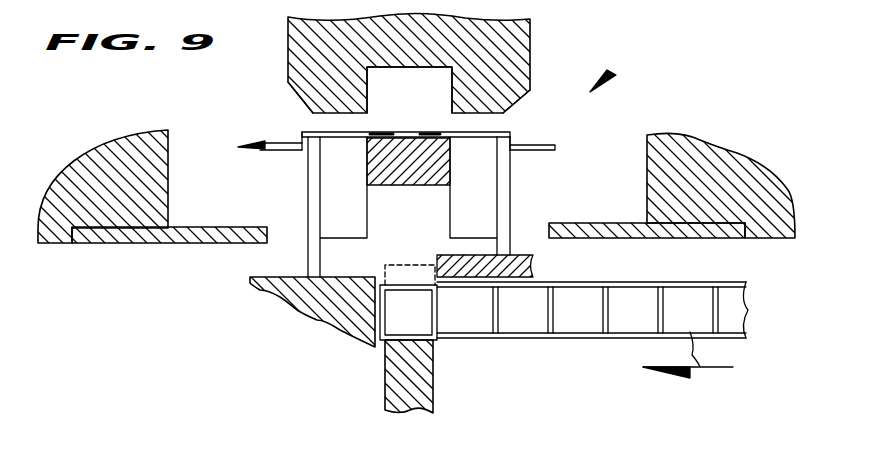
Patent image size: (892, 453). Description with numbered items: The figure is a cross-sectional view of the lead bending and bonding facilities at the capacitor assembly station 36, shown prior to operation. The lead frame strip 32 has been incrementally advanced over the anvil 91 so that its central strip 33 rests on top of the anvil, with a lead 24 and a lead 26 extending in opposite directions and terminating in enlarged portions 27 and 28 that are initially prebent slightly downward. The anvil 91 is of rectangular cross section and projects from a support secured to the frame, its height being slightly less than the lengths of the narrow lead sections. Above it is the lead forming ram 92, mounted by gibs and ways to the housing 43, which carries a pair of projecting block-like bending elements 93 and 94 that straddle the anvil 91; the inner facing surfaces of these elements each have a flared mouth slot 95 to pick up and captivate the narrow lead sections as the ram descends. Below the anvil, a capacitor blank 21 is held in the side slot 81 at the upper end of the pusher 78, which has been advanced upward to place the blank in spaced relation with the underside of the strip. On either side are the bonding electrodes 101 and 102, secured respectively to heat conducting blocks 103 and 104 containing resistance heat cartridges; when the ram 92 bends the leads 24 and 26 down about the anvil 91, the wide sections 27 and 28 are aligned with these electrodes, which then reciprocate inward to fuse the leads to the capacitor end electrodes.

The lead forming ram 92 is at (522, 50).
The bending element 93 is at (288, 88).
The bending element 94 is at (528, 90).
The flared mouth slot 95 is at (452, 88).
The central strip 33 is at (390, 133).
The lead 24 is at (302, 130).
The lead 26 is at (483, 127).
The enlarged portion 27 is at (300, 152).
The lead frame strip 32 is at (240, 148).
The enlarged portion 28 is at (543, 152).
The anvil 91 is at (402, 186).
The heat conducting block 103 is at (113, 147).
The bonding electrode 101 is at (227, 243).
The heat conducting block 104 is at (707, 153).
The bonding electrode 102 is at (570, 222).
The housing 43 is at (295, 308).
The side slot 81 is at (403, 328).
The pusher 78 is at (385, 380).
The capacitor blank 21 is at (507, 328).
The capacitor assembly station 36 is at (611, 72).